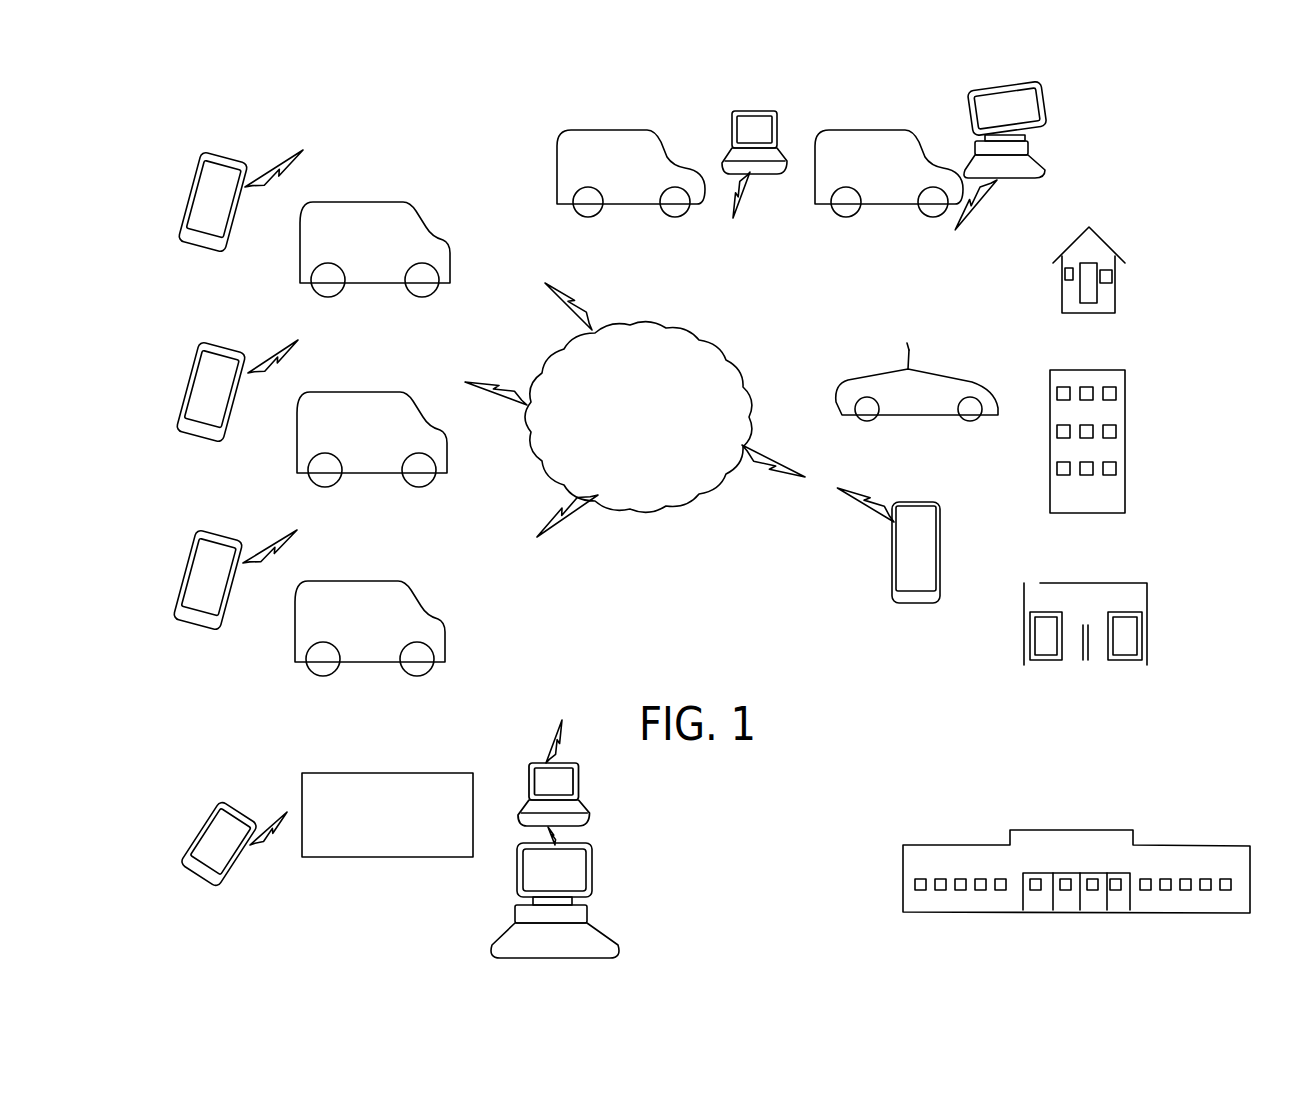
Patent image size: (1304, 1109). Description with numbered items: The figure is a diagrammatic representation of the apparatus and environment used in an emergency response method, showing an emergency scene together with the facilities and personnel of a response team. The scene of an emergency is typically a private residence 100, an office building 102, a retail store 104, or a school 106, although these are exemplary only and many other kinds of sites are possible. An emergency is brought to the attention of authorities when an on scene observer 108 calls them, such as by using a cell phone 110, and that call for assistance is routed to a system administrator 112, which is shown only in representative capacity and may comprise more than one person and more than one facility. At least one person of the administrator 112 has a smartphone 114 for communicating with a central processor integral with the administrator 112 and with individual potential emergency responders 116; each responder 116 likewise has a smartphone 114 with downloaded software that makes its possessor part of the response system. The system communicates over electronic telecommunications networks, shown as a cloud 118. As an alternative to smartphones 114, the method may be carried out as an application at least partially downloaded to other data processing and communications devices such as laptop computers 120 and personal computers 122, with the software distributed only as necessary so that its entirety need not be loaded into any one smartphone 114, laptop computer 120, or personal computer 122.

The private residence 100 is at (1103, 243).
The office building 102 is at (1125, 392).
The retail store 104 is at (1150, 615).
The school 106 is at (1175, 843).
The on scene observer 108 is at (917, 365).
The cell phone 110 is at (940, 537).
The system administrator 112 is at (382, 773).
The smartphone 114 is at (190, 196).
The potential emergency responder 116 is at (360, 202).
The cloud 118 is at (673, 396).
The laptop computer 120 is at (752, 111).
The personal computer 122 is at (1007, 84).